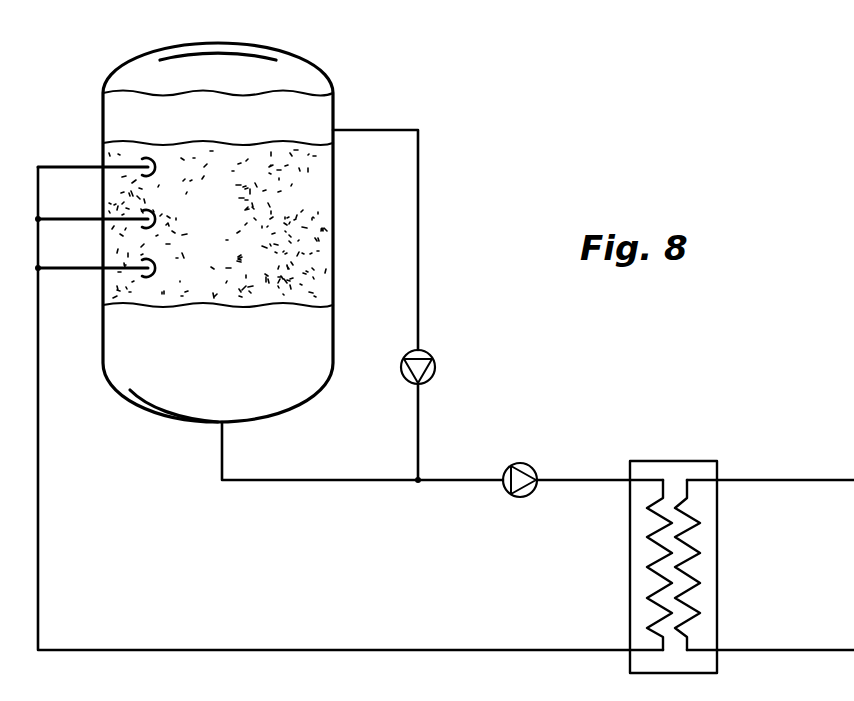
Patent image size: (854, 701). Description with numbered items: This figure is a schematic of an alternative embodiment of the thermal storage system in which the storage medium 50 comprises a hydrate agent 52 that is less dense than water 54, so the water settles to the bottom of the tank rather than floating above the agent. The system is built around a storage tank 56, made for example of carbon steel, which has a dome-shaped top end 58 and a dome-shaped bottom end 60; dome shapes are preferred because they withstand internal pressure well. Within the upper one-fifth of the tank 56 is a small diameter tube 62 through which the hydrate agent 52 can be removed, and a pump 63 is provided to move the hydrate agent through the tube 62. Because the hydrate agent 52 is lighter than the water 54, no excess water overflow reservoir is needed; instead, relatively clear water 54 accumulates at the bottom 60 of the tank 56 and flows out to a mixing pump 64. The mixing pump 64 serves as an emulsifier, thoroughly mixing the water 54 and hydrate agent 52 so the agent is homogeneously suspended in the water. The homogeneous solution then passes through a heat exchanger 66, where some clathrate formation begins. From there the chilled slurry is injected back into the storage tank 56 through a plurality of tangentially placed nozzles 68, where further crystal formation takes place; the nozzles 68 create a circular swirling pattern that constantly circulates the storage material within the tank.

The storage medium 50 is at (335, 193).
The hydrate agent 52 is at (320, 112).
The water 54 is at (165, 398).
The storage tank 56 is at (338, 272).
The dome-shaped top end 58 is at (278, 50).
The dome-shaped bottom end 60 is at (262, 422).
The small diameter tube 62 is at (420, 208).
The pump 63 is at (436, 362).
The mixing pump 64 is at (522, 463).
The heat exchanger 66 is at (683, 461).
The tangentially placed nozzles 68 is at (170, 152).